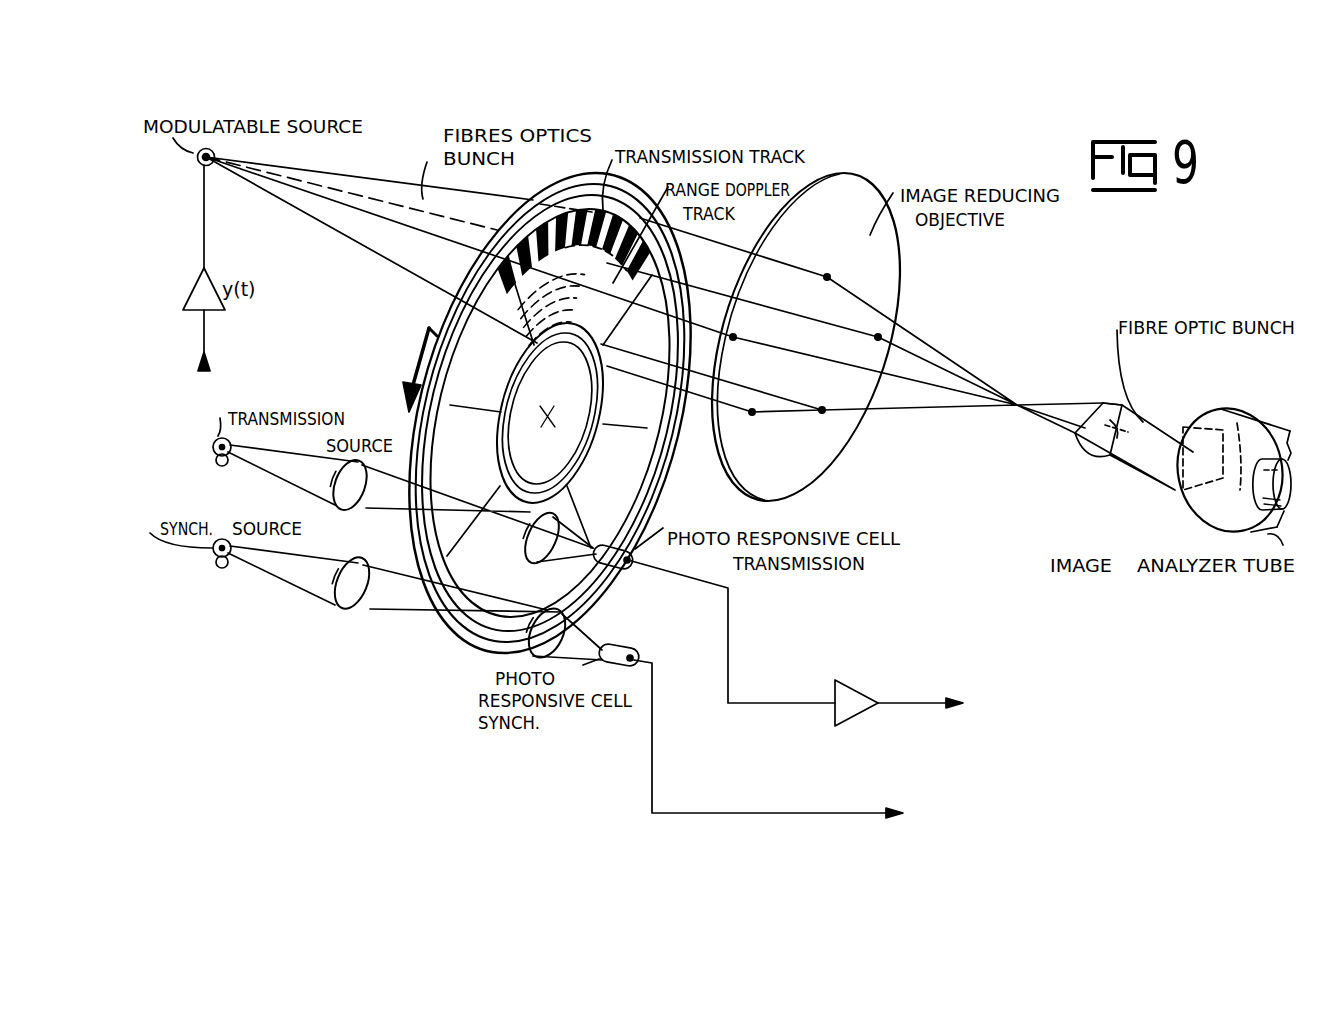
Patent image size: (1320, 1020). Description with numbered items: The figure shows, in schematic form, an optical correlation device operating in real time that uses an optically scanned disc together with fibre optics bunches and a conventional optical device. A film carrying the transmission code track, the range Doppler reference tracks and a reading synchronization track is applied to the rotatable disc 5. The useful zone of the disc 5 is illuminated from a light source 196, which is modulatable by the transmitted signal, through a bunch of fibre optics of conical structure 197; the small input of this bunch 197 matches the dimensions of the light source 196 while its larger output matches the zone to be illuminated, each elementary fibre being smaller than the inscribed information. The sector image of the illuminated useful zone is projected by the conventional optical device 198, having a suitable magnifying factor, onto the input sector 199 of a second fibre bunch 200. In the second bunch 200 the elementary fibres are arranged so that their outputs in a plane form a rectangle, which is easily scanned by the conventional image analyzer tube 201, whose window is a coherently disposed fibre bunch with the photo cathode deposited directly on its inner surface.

The rotatable disc 5 is at (488, 567).
The light source 196 is at (198, 166).
The bunch of fibre optics of conical structure 197 is at (368, 185).
The conventional optical device 198 is at (830, 442).
The input sector of second fibre bunch 199 is at (1097, 433).
The second fibre bunch 200 is at (1156, 415).
The image analyzer tube 201 is at (1215, 508).